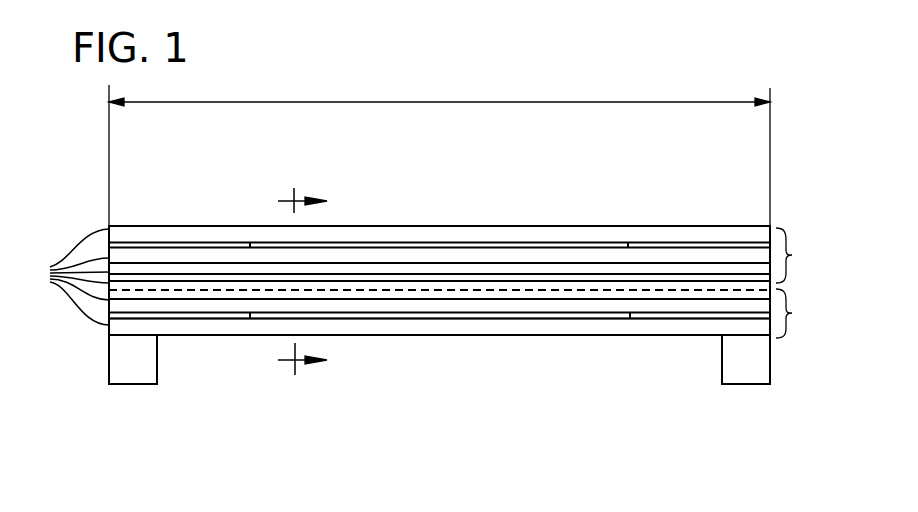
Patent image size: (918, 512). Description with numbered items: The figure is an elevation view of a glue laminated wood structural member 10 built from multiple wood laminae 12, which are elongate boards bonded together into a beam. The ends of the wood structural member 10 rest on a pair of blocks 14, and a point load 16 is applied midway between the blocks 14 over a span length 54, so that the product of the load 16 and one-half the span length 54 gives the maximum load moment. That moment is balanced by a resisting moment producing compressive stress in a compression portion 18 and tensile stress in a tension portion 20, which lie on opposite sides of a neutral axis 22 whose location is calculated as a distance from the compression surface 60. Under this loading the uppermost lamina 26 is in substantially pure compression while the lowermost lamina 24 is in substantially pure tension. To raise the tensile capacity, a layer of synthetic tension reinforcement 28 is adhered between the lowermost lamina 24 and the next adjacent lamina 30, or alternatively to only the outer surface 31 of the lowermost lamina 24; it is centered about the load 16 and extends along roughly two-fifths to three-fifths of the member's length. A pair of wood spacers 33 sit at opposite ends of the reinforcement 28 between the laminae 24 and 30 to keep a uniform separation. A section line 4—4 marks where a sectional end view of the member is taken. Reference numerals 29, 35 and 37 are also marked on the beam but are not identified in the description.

The line 4— 4 is at (299, 285).
The wood structural member 10 is at (584, 178).
The wood laminae 12 is at (64, 277).
The blocks 14 is at (130, 384).
The point load 16 is at (472, 206).
The compression portion 18 is at (467, 255).
The tension portion 20 is at (467, 313).
The neutral axis 22 is at (570, 290).
The lowermost lamina 24 is at (428, 328).
The uppermost lamina 26 is at (617, 236).
The synthetic tension reinforcement 28 is at (355, 320).
The upper sheet 29 is at (516, 249).
The next adjacent lamina 30 is at (617, 310).
The outer surface 31 is at (475, 338).
The wood spacers 33 is at (221, 318).
The intermediate plate 35 is at (395, 263).
The upper end bars 37 is at (216, 247).
The span length 54 is at (342, 104).
The compression surface 60 is at (347, 226).